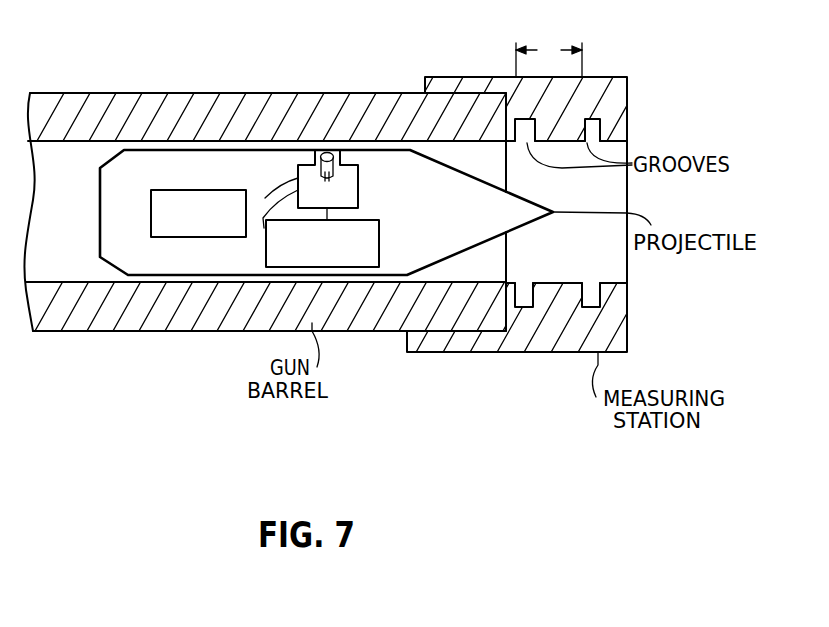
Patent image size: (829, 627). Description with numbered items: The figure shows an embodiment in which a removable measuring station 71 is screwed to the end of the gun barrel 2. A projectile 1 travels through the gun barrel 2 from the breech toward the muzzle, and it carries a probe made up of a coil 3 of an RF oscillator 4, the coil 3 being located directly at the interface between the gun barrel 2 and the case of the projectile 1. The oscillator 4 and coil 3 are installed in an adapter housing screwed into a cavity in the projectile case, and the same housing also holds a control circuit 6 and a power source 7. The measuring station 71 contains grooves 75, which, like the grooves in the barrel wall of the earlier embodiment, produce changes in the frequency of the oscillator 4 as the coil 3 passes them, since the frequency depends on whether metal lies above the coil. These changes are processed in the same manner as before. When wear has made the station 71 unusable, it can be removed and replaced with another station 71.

The projectile 1 is at (520, 222).
The gun barrel 2 is at (169, 318).
The coil 3 is at (328, 150).
The RF oscillator 4 is at (355, 179).
The control circuit 6 is at (367, 260).
The power source 7 is at (151, 218).
The measuring station 71 is at (627, 317).
The grooves 75 is at (596, 305).